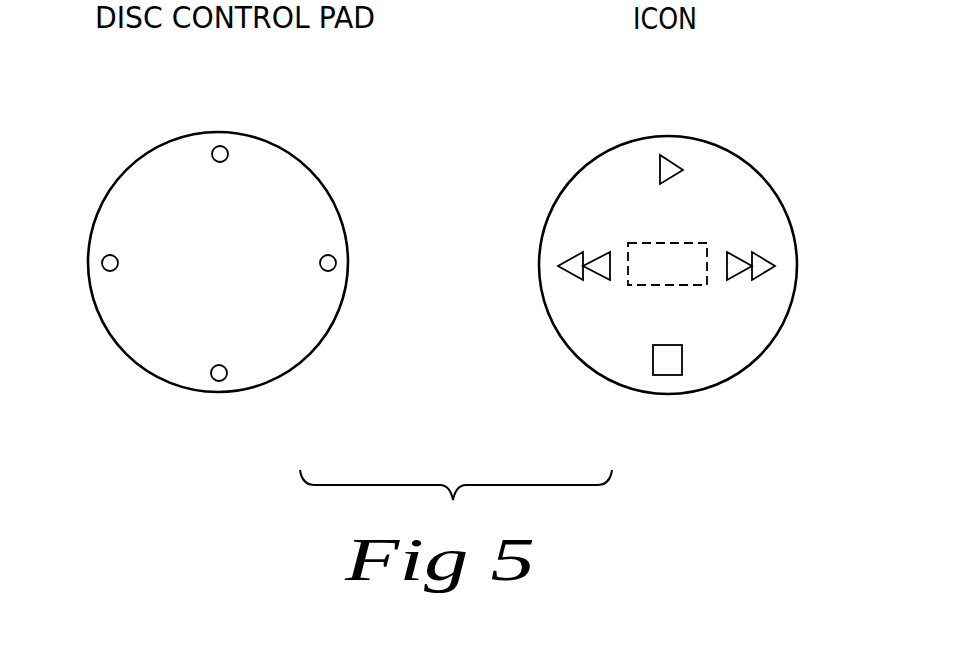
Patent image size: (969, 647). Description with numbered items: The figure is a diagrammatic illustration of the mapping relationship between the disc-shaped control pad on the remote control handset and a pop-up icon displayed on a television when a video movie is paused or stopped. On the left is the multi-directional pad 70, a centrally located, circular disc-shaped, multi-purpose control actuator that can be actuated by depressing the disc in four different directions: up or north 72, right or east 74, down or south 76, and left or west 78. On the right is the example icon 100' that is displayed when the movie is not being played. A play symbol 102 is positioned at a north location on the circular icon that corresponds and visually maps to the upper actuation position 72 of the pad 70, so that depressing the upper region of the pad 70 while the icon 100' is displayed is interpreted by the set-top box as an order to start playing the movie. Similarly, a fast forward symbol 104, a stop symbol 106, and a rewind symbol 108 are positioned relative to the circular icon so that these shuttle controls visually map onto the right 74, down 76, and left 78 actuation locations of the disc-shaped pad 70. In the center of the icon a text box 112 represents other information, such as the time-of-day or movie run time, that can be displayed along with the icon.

The multi-directional pad 70 is at (290, 152).
The up or north actuation position 72 is at (197, 162).
The right or east actuation position 74 is at (323, 280).
The down or south actuation position 76 is at (238, 352).
The left or west actuation position 78 is at (120, 237).
The icon 100' is at (703, 264).
The play symbol 102 is at (668, 157).
The fast forward symbol 104 is at (758, 257).
The stop symbol 106 is at (660, 367).
The rewind symbol 108 is at (572, 257).
The text box 112 is at (678, 287).